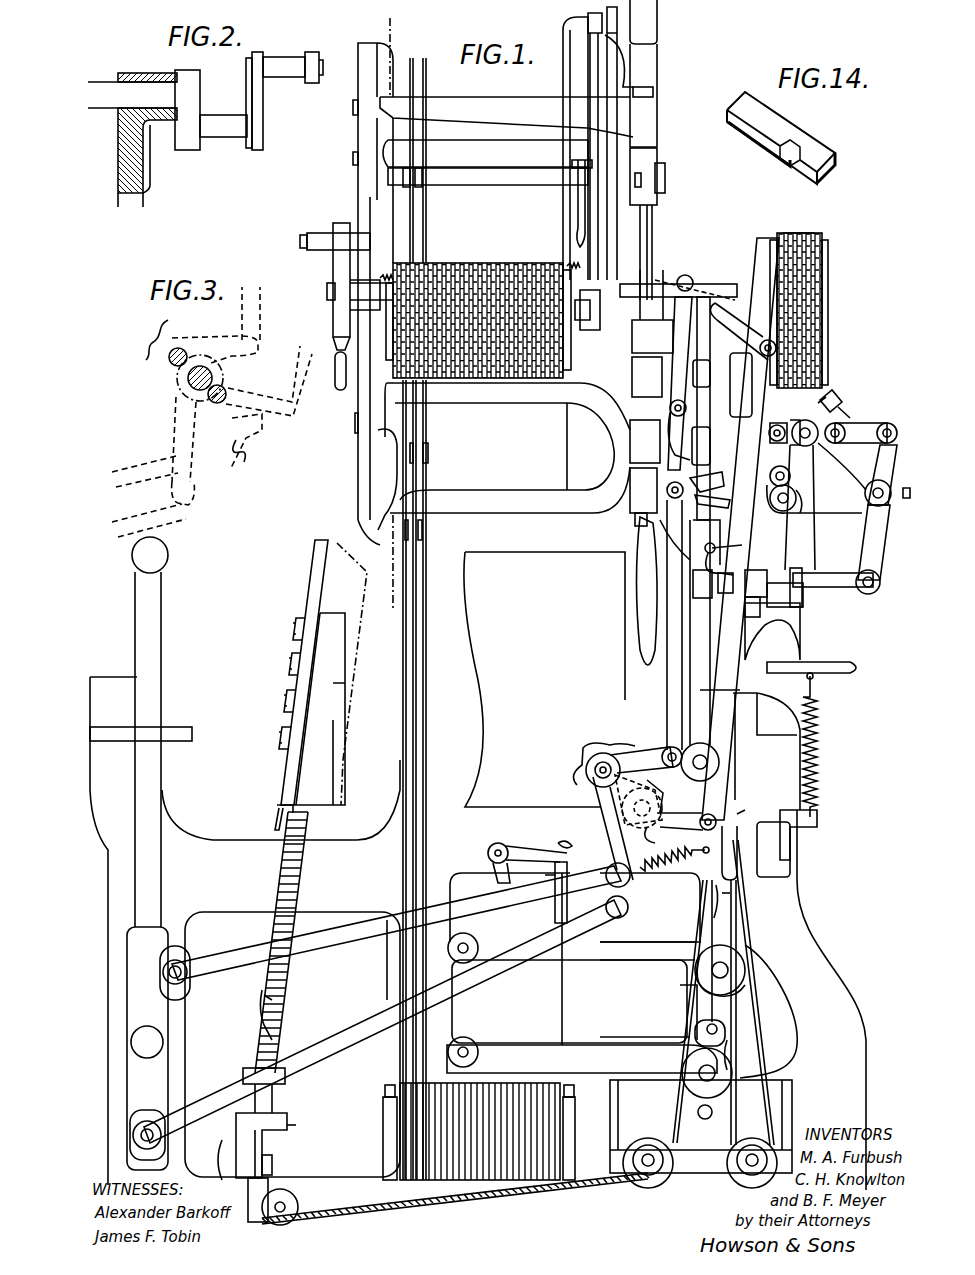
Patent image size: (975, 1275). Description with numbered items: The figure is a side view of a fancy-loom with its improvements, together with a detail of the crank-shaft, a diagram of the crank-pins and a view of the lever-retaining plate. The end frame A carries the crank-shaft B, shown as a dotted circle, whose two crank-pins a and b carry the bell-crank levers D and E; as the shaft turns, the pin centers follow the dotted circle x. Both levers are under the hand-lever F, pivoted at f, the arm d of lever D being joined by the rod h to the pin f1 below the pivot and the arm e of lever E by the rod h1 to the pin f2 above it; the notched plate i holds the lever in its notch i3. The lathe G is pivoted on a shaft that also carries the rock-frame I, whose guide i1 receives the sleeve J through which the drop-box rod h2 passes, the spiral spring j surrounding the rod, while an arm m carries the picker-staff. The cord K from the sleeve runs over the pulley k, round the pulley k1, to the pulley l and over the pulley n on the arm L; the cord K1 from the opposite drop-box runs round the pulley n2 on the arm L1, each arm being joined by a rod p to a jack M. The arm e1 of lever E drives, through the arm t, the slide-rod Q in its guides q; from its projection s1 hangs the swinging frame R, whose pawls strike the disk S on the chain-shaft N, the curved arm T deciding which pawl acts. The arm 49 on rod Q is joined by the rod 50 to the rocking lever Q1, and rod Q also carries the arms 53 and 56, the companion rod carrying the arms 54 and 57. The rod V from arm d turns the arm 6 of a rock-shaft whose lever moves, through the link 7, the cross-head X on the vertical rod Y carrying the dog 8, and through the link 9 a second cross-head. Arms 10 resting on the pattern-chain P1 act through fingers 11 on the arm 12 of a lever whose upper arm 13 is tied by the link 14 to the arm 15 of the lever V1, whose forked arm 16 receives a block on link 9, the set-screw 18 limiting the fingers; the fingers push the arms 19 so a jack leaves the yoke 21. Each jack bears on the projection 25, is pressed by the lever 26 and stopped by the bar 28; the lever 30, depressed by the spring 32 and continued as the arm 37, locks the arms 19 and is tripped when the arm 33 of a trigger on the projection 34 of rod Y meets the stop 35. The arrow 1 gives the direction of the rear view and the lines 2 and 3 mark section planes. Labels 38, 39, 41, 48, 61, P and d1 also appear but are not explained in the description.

In FIG. 1, the arrow 1 is at (883, 630).
In FIG. 1, the section line 2 is at (575, 275).
In FIG. 1, the section line 3 is at (335, 375).
In FIG. 1, the arm 6 is at (743, 331).
In FIG. 1, the link 7 is at (680, 383).
In FIG. 1, the dog 8 is at (679, 430).
In FIG. 1, the link 9 is at (784, 425).
In FIG. 1, the arms 10 is at (797, 250).
In FIG. 1, the finger 11 is at (833, 571).
In FIG. 1, the arm 12 is at (873, 549).
In FIG. 1, the upper arm 13 is at (887, 475).
In FIG. 1, the link 14 is at (866, 432).
In FIG. 1, the arm 15 is at (842, 451).
In FIG. 1, the forked arm 16 is at (801, 484).
In FIG. 1, the set-screw 18 is at (835, 399).
In FIG. 1, the arm 19 is at (766, 706).
In FIG. 1, the yoke 21 is at (803, 597).
In FIG. 1, the rounded projection 25 is at (747, 812).
In FIG. 1, the lever 26 is at (674, 826).
In FIG. 1, the bar 28 is at (730, 893).
In FIG. 1, the lever 30 is at (811, 665).
In FIG. 1, the spring 32 is at (817, 745).
In FIG. 1, the arm 33 is at (711, 473).
In FIG. 1, the projection 34 is at (712, 502).
In FIG. 1, the stop 35 is at (723, 551).
In FIG. 1, the arm 37 is at (645, 591).
In FIG. 1, the bracket 38 is at (493, 880).
In FIG. 1, the arm 39 is at (530, 849).
In FIG. 1, the bar 41 is at (562, 977).
In FIG. 1, the spring box 48 is at (479, 1138).
In FIG. 1, the arm 49 is at (665, 170).
In FIG. 1, the rod 50 is at (652, 236).
In FIG. 1, the arm 53 is at (507, 416).
In FIG. 1, the arm 54 is at (510, 458).
In FIG. 1, the arm 56 is at (506, 117).
In FIG. 1, the arm 57 is at (485, 153).
In FIG. 1, the bar 61 is at (490, 178).
In FIG. 1, the end frame A is at (478, 871).
In FIG. 2, the crank-shaft B is at (132, 140).
In FIG. 1, the crank-shaft B is at (638, 801).
In FIG. 3, the bell-crank lever D is at (246, 442).
In FIG. 1, the bell-crank lever D is at (674, 813).
In FIG. 3, the bell-crank lever E is at (155, 338).
In FIG. 1, the bell-crank lever E is at (600, 762).
In FIG. 1, the hand-lever F is at (147, 853).
In FIG. 1, the lathe G is at (353, 678).
In FIG. 1, the frame I is at (247, 1146).
In FIG. 1, the sleeve J is at (264, 1090).
In FIG. 1, the chain or cord K is at (511, 1033).
In FIG. 1, the cord or chain K1 is at (681, 1012).
In FIG. 1, the arm L is at (582, 1058).
In FIG. 1, the arm L1 is at (575, 955).
In FIG. 1, the jack M is at (757, 830).
In FIG. 1, the chain-shaft N is at (518, 286).
In FIG. 1, the pattern chain P is at (478, 310).
In FIG. 1, the endless chain P1 is at (809, 310).
In FIG. 1, the slide-rod Q is at (653, 92).
In FIG. 1, the rocking lever Q1 is at (657, 391).
In FIG. 1, the swinging frame R is at (590, 76).
In FIG. 1, the disk S is at (693, 640).
In FIG. 1, the curved arm T is at (592, 310).
In FIG. 1, the rod V is at (740, 559).
In FIG. 1, the lever V1 is at (547, 892).
In FIG. 1, the cross-head X is at (732, 425).
In FIG. 1, the vertical rod Y is at (724, 408).
In FIG. 2, the crank-pin a is at (211, 110).
In FIG. 3, the crank-pin a is at (223, 393).
In FIG. 2, the crank-pin b is at (284, 101).
In FIG. 3, the crank-pin b is at (179, 348).
In FIG. 3, the arm d is at (186, 489).
In FIG. 1, the arm d is at (630, 893).
In FIG. 3, the pivot d1 is at (269, 381).
In FIG. 1, the pivot d1 is at (699, 819).
In FIG. 3, the arm e is at (184, 439).
In FIG. 1, the arm e is at (613, 828).
In FIG. 3, the arm e1 is at (216, 325).
In FIG. 1, the arm e1 is at (646, 759).
In FIG. 1, the pivot f is at (147, 1042).
In FIG. 1, the pin f1 is at (140, 1135).
In FIG. 1, the pin f2 is at (178, 975).
In FIG. 3, the rod h is at (149, 520).
In FIG. 1, the rod h is at (382, 1021).
In FIG. 3, the rod h1 is at (145, 471).
In FIG. 1, the rod h1 is at (396, 923).
In FIG. 1, the drop-box rod h2 is at (290, 1003).
In FIG. 14, the notched plate i is at (790, 136).
In FIG. 1, the notched plate i is at (147, 731).
In FIG. 1, the guide i1 is at (299, 1126).
In FIG. 14, the notch i3 is at (786, 160).
In FIG. 1, the spiral spring j is at (295, 852).
In FIG. 1, the pulley k is at (276, 815).
In FIG. 1, the pulley k1 is at (276, 1201).
In FIG. 1, the pulley l is at (701, 1134).
In FIG. 1, the arm m is at (272, 1165).
In FIG. 1, the pulley n is at (716, 989).
In FIG. 1, the pulley n2 is at (736, 1066).
In FIG. 1, the rod p is at (710, 901).
In FIG. 1, the guides q is at (646, 198).
In FIG. 1, the projection s1 is at (619, 61).
In FIG. 1, the arm t is at (667, 487).
In FIG. 3, the dotted circle x is at (188, 378).